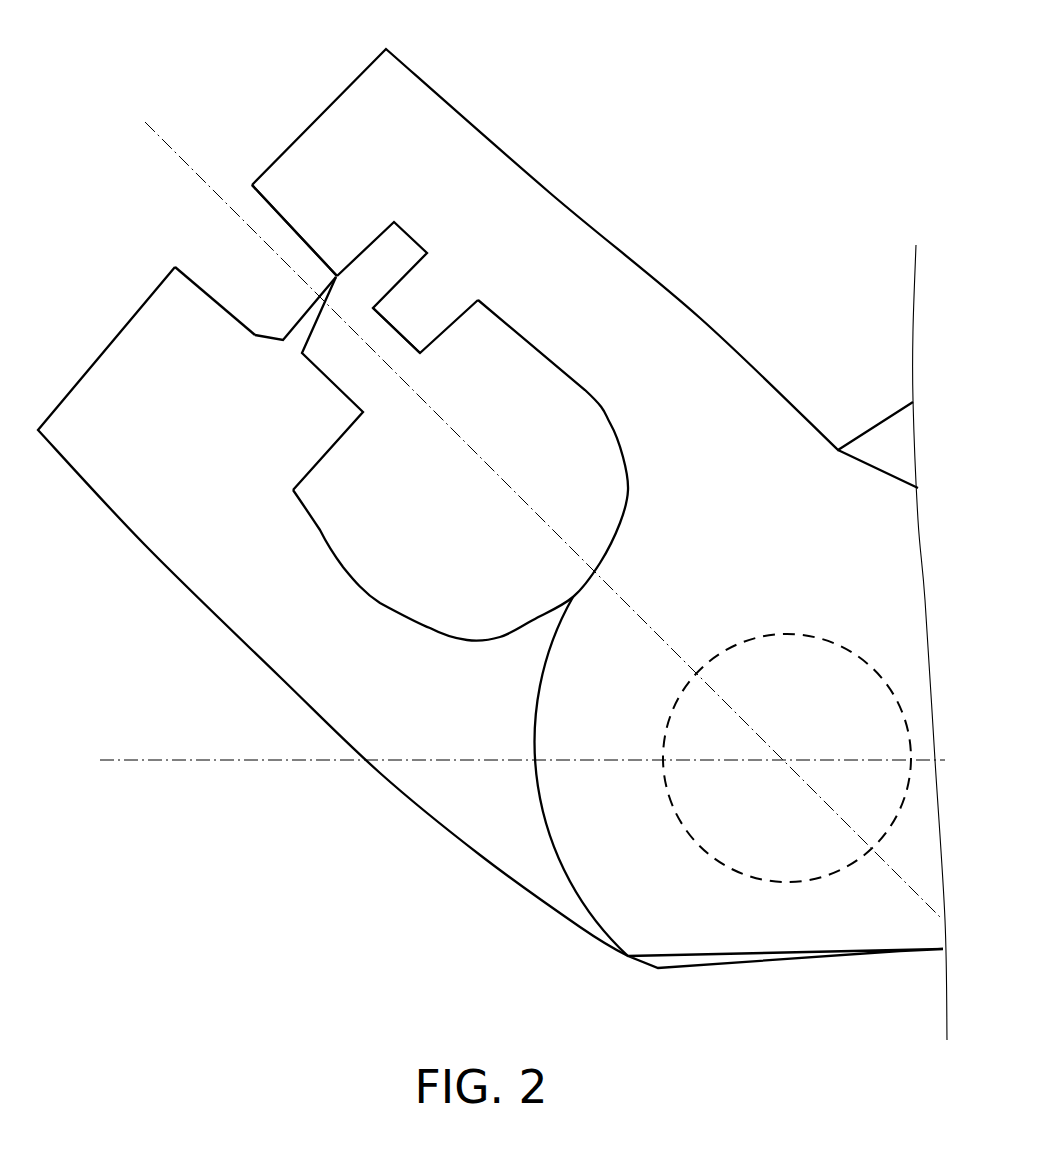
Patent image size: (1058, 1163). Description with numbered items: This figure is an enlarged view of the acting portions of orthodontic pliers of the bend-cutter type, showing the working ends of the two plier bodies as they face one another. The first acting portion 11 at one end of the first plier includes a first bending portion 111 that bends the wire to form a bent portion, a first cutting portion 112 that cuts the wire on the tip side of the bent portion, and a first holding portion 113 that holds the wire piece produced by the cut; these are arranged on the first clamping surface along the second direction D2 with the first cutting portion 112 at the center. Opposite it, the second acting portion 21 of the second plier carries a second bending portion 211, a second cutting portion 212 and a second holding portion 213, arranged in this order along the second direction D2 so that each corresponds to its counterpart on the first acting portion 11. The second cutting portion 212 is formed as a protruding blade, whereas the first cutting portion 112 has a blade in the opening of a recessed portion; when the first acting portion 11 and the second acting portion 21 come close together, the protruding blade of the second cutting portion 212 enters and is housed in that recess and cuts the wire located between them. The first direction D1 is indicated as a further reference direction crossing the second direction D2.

The first acting portion 11 is at (483, 134).
The first bending portion 111 is at (298, 240).
The first cutting portion 112 is at (353, 263).
The first holding portion 113 is at (396, 333).
The second acting portion 21 is at (145, 548).
The second bending portion 211 is at (208, 293).
The second cutting portion 212 is at (301, 316).
The second holding portion 213 is at (338, 382).
The first direction D1 is at (180, 760).
The second direction D2 is at (186, 157).